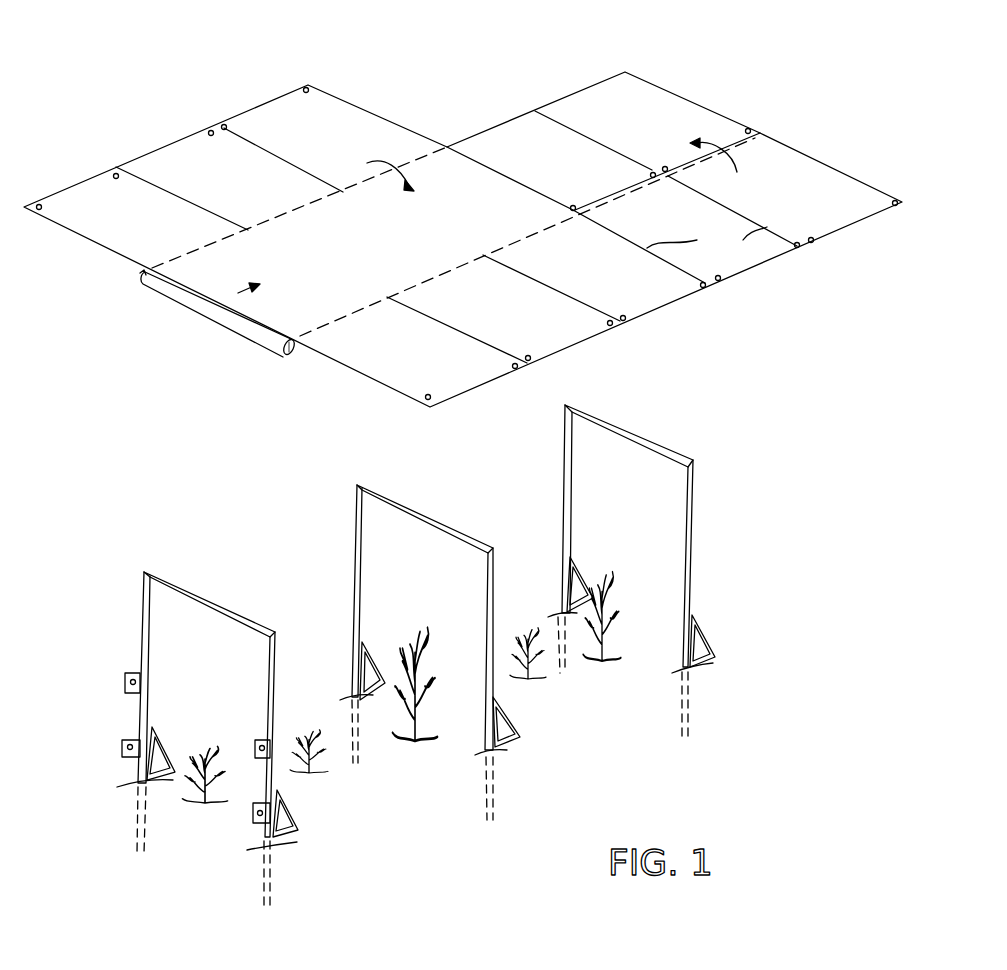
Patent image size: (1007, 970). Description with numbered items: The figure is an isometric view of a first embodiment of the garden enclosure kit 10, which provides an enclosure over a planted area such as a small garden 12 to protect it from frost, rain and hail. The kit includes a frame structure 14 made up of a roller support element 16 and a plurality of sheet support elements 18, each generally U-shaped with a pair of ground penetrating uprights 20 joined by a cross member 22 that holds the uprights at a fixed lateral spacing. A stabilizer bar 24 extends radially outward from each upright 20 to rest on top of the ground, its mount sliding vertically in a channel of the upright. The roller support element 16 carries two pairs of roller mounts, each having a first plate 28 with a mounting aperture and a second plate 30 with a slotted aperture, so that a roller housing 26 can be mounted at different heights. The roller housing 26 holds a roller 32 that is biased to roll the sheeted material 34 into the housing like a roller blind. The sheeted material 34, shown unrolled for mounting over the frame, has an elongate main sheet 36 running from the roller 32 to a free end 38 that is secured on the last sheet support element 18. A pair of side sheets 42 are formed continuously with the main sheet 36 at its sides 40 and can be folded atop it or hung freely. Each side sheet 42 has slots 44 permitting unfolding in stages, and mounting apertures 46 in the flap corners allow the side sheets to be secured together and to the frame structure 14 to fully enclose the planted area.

The garden enclosure kit 10 is at (764, 378).
The small garden 12 is at (398, 768).
The frame structure 14 is at (710, 505).
The roller support element 16 is at (212, 597).
The sheet support element 18 is at (427, 513).
The ground penetrating upright 20 is at (142, 645).
The cross member 22 is at (238, 620).
The stabilizer bar 24 is at (167, 787).
The roller housing 26 is at (217, 317).
The first plate 28 is at (255, 752).
The second plate 30 is at (137, 698).
The roller 32 is at (138, 276).
The sheeted material 34 is at (506, 80).
The main sheet 36 is at (452, 210).
The free end 38 is at (710, 112).
The side 40 is at (310, 203).
The side sheet 42 is at (288, 110).
The slot 44 is at (295, 167).
The mounting aperture 46 is at (116, 168).